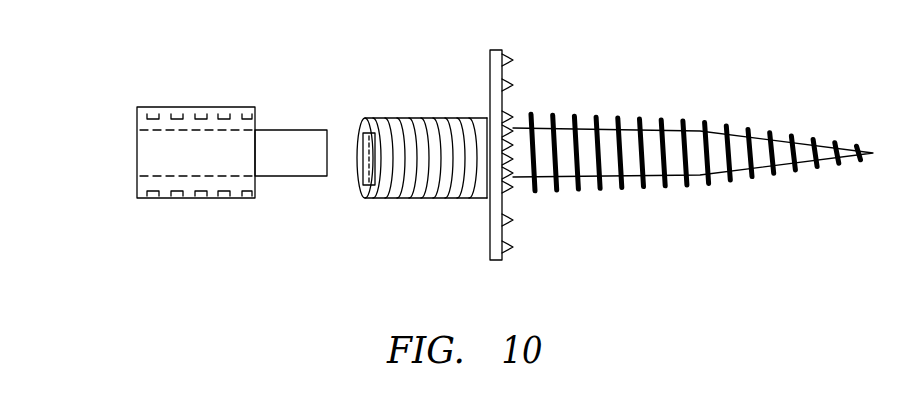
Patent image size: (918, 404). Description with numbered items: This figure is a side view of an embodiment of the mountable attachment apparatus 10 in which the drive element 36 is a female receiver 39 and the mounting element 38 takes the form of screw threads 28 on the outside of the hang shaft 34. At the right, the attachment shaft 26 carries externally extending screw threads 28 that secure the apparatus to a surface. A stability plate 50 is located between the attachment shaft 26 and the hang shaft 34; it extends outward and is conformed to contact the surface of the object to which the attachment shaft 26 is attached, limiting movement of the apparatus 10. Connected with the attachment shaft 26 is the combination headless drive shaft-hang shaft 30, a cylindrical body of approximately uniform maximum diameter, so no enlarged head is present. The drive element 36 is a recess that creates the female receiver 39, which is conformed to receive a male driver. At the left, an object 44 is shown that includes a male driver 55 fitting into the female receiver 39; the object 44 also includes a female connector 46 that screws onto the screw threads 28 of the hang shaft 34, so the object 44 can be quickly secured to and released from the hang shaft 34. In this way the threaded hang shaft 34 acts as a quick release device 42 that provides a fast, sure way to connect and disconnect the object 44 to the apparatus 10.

The mountable attachment apparatus 10 is at (820, 54).
The attachment shaft 26 is at (700, 174).
The screw threads 28 is at (224, 198).
The combination headless drive shaft-hang shaft 30 is at (365, 216).
The hang shaft 34 is at (406, 198).
The drive element 36 is at (367, 118).
The mounting element 38 is at (393, 104).
The female receiver 39 is at (362, 178).
The quick release device 42 is at (164, 205).
The object 44 is at (138, 107).
The connector 46 is at (160, 108).
The stability plate 50 is at (495, 260).
The male driver 55 is at (300, 137).